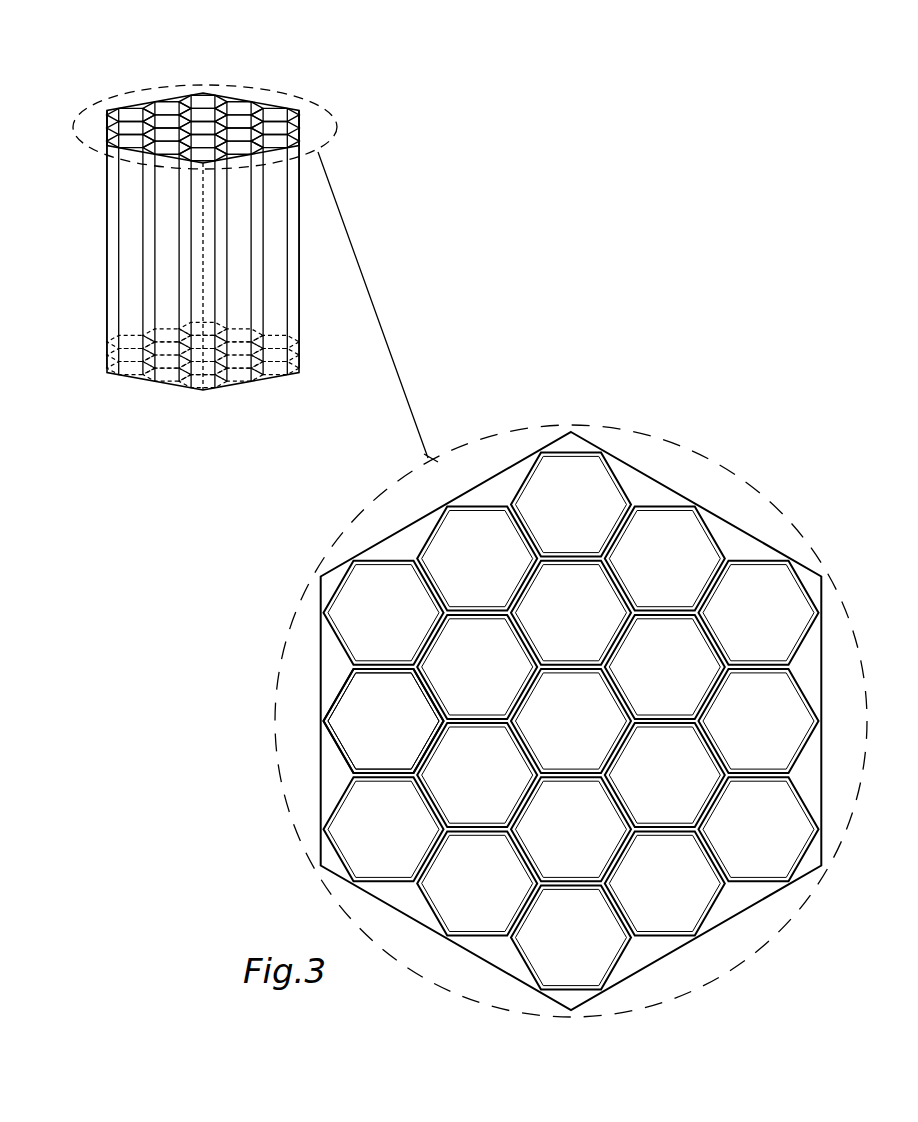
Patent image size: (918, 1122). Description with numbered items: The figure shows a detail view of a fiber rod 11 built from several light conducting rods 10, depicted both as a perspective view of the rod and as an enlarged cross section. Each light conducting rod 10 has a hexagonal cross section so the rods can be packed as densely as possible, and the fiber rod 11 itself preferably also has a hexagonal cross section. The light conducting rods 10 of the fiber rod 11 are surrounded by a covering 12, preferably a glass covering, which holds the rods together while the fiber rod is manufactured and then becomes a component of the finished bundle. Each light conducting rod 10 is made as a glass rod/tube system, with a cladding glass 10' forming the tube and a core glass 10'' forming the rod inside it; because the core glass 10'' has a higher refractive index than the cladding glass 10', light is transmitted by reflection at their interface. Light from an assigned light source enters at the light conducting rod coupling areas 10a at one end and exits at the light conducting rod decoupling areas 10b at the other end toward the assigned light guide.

The light conducting rod 10 is at (545, 721).
The cladding glass 10' is at (307, 721).
The core glass 10'' is at (305, 722).
The light conducting rod coupling area 10a is at (130, 353).
The light conducting rod decoupling area 10b is at (130, 110).
The fiber rod 11 is at (82, 270).
The covering 12 is at (733, 530).